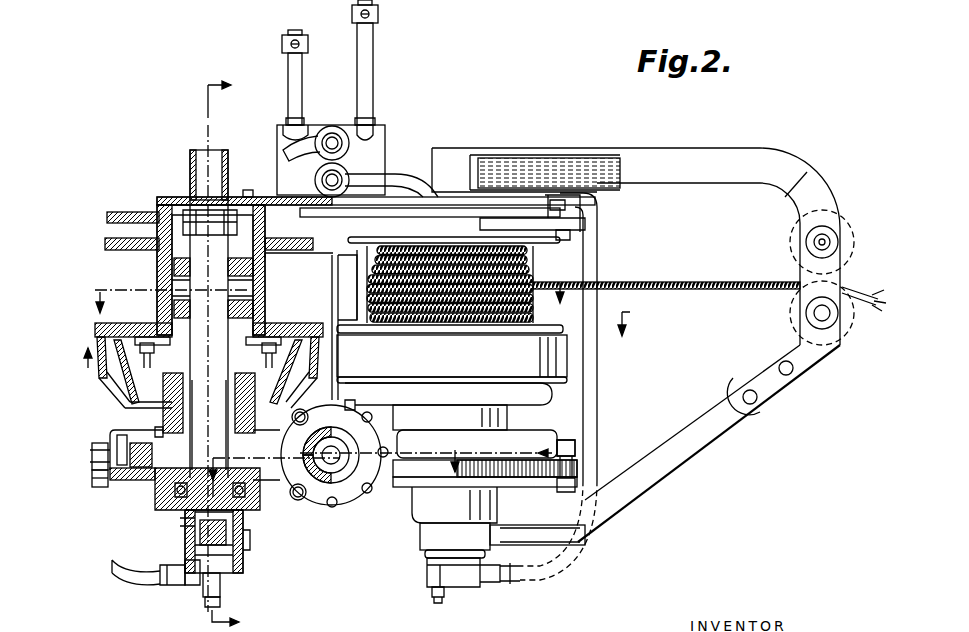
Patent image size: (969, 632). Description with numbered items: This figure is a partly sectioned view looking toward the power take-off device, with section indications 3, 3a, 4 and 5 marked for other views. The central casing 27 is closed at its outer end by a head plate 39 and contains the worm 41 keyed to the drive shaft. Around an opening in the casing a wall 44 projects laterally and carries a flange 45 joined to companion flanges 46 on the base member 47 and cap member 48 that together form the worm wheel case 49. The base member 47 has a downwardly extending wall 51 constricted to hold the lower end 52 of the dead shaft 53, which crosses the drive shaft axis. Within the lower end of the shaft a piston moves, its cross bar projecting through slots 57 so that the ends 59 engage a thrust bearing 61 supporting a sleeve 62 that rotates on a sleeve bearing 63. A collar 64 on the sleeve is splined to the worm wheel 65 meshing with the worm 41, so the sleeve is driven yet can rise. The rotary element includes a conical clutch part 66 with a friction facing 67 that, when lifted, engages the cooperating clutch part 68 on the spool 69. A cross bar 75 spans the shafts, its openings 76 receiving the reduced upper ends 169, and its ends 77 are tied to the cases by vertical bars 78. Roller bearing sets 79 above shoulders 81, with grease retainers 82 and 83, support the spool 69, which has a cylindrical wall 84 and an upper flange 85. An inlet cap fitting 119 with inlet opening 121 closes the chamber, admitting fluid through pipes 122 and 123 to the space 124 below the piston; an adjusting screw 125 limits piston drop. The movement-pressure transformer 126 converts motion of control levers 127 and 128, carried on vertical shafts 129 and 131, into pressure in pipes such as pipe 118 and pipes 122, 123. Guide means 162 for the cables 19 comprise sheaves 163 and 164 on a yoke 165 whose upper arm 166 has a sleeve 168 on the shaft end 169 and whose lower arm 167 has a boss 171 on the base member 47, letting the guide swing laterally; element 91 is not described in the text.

The section line 3- 3 is at (220, 349).
The section line 3a- 3a is at (375, 465).
The section line 4- 4 is at (358, 340).
The section line 5- 5 is at (330, 286).
The cable 19 is at (668, 283).
The central casing 27 is at (336, 490).
The head plate 39 is at (350, 492).
The worm 41 is at (340, 400).
The wall 44 is at (296, 376).
The flange 45 is at (312, 500).
The companion flange 46 is at (268, 485).
The base member 47 is at (178, 498).
The cap member 48 is at (110, 440).
The worm wheel case 49 is at (578, 445).
The downwardly extending wall 51 is at (172, 532).
The lower end of dead shaft 52 is at (245, 538).
The dead shaft 53 is at (217, 413).
The slot 57 is at (243, 522).
The end of cross bar 59 is at (200, 525).
The thrust bearing 61 is at (190, 510).
The sleeve 62 is at (170, 485).
The sleeve bearing 63 is at (108, 480).
The collar 64 is at (150, 480).
The worm wheel 65 is at (130, 436).
The clutch part 66 is at (118, 409).
The facing 67 is at (122, 345).
The cooperating clutch part 68 is at (103, 337).
The spool 69 is at (262, 274).
The cross bar 75 is at (178, 197).
The opening 76 is at (240, 196).
The end of cross bar 77 is at (535, 225).
The vertical bar 78 is at (570, 372).
The roller bearing set 79 is at (258, 250).
The shoulder 81 is at (209, 368).
The grease retainer 82 is at (178, 214).
The grease retainer 83 is at (262, 326).
The cylindrical wall 84 is at (157, 265).
The upper flange 85 is at (112, 220).
The bracket 91 is at (332, 288).
The pipe 118 is at (360, 190).
The inlet cap fitting 119 is at (243, 575).
The inlet opening 121 is at (200, 598).
The pipe 122 is at (128, 575).
The pipe 123 is at (600, 215).
The space 124 is at (190, 583).
The adjusting screw 125 is at (243, 558).
The movement-pressure transformer 126 is at (395, 140).
The control lever 127 is at (282, 44).
The control lever 128 is at (378, 16).
The vertical shaft 129 is at (288, 98).
The vertical shaft 131 is at (373, 80).
The guide means 162 is at (787, 262).
The sheave 163 is at (792, 235).
The sheave 164 is at (792, 313).
The yoke 165 is at (714, 148).
The upper arm 166 is at (622, 152).
The lower arm 167 is at (612, 524).
The sleeve 168 is at (448, 150).
The upper end of dead shaft 169 is at (205, 158).
The boss 171 is at (420, 545).